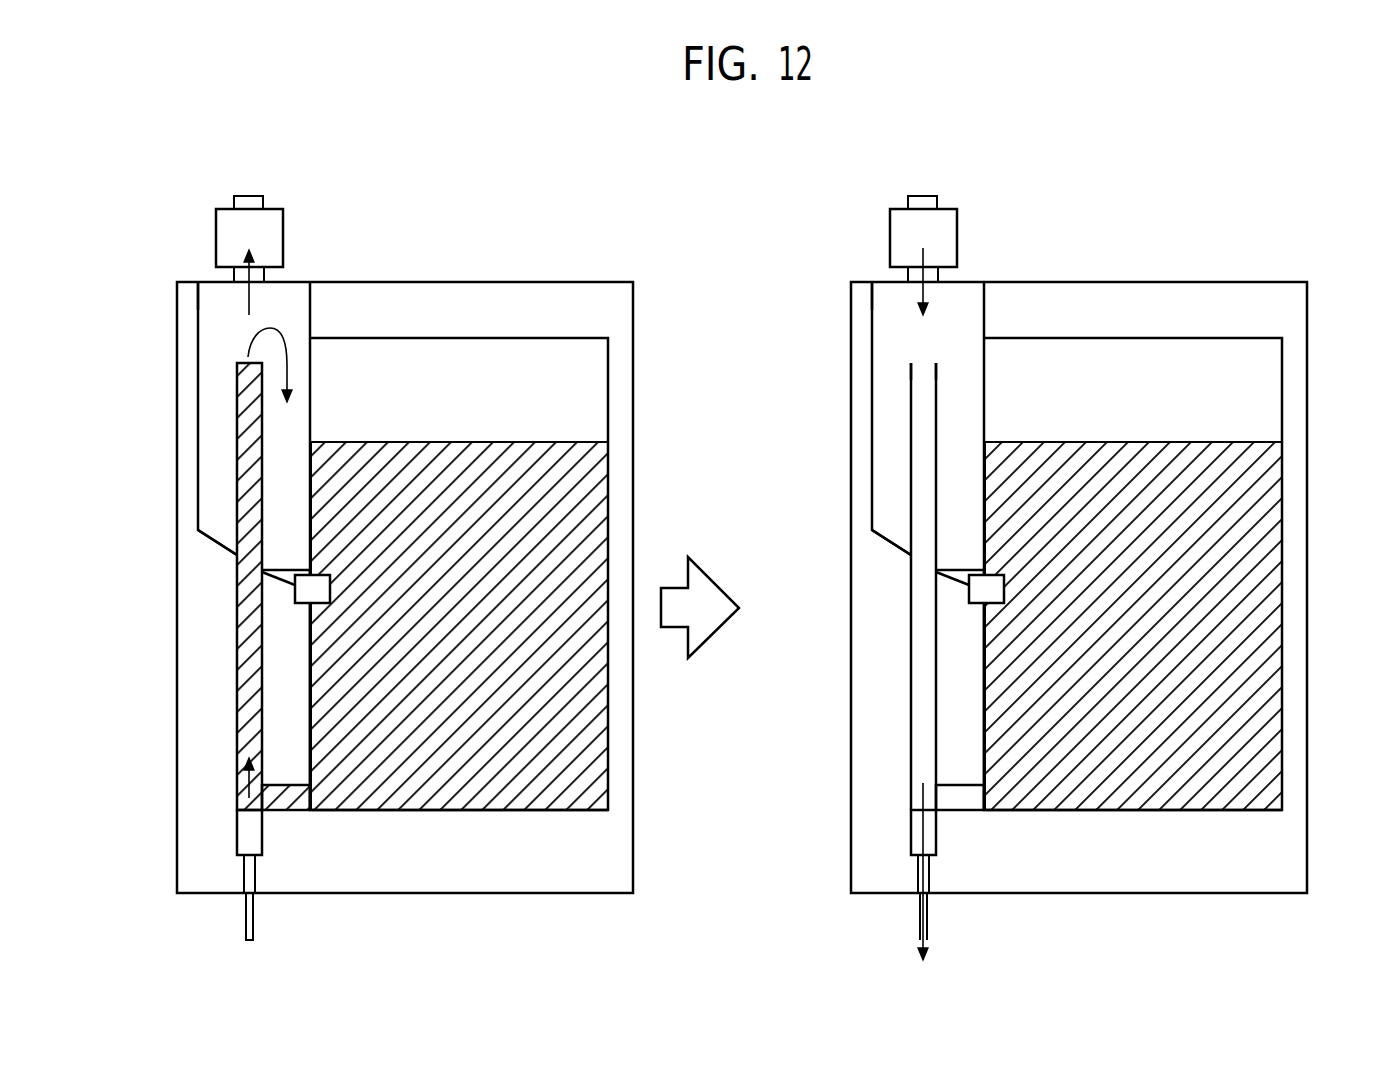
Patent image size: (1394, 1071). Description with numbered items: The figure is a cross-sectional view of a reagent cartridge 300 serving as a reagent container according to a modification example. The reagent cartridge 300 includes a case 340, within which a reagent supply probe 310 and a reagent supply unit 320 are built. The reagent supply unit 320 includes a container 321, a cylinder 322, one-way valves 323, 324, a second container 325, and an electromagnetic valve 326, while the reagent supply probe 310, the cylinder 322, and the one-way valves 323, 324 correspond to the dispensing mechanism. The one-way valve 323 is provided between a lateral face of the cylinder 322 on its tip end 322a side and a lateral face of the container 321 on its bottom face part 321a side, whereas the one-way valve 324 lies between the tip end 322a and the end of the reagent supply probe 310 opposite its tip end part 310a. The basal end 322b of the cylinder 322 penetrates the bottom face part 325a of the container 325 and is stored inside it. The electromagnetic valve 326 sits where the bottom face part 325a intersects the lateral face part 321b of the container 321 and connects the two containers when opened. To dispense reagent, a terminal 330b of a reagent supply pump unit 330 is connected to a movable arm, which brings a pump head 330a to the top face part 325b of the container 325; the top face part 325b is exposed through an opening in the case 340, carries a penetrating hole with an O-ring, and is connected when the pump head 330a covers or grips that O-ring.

The reagent cartridge 300 is at (497, 178).
The reagent supply probe 310 is at (257, 873).
The tip end part 310a is at (247, 933).
The reagent supply unit 320 is at (510, 262).
The container 321 is at (624, 362).
The bottom face part 321a is at (543, 813).
The lateral face part 321b is at (303, 740).
The cylinder 322 is at (237, 658).
The tip end 322a is at (243, 795).
The basal end 322b is at (240, 386).
The one-way valve 323 is at (297, 813).
The one-way valve 324 is at (237, 830).
The container 325 is at (196, 406).
The bottom face part 325a is at (218, 538).
The top face part 325b is at (207, 282).
The electromagnetic valve 326 is at (300, 605).
The reagent supply pump unit 330 is at (299, 241).
The pump head 330a is at (266, 278).
The terminal 330b is at (264, 207).
The case 340 is at (637, 301).